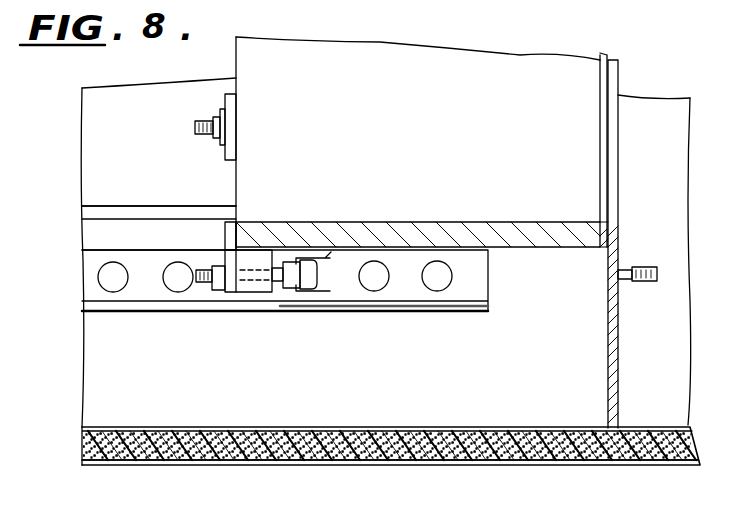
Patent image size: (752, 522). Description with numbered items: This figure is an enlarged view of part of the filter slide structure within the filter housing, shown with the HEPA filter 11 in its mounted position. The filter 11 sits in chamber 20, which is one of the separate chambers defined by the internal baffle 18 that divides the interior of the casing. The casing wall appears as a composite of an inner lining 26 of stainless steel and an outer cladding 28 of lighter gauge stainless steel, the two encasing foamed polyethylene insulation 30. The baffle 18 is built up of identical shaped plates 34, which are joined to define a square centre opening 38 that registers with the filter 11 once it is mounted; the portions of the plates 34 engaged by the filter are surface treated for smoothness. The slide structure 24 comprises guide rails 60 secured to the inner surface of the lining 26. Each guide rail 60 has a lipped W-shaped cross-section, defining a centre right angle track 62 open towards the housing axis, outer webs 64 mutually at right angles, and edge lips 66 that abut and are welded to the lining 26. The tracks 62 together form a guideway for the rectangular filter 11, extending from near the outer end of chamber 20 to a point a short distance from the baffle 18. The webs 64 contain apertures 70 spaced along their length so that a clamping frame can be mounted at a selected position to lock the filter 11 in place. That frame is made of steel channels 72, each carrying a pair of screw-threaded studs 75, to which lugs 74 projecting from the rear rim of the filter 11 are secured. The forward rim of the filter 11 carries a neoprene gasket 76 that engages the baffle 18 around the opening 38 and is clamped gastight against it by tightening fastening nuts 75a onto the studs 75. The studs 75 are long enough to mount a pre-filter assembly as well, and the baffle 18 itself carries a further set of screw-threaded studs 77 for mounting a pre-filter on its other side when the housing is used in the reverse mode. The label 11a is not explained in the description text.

The HEPA filter 11 is at (388, 89).
The base plate of body 11a is at (507, 232).
The internal baffle 18 is at (628, 203).
The chamber 20 is at (164, 391).
The slide structure 24 is at (204, 200).
The inner lining 26 is at (463, 428).
The outer cladding 28 is at (432, 468).
The foamed polyethylene insulation 30 is at (498, 436).
The shaped plate 34 is at (608, 358).
The square centre opening 38 is at (604, 182).
The guide rail 60 is at (120, 318).
The centre right angle track 62 is at (97, 236).
The outer web 64 is at (90, 262).
The edge lip 66 is at (107, 213).
The aperture 70 is at (104, 279).
The steel channel 72 is at (318, 291).
The lug 74 is at (230, 106).
The screw-threaded stud 75 is at (195, 128).
The fastening nut 75a is at (218, 139).
The neoprene gasket 76 is at (601, 237).
The screw-threaded stud 77 is at (648, 282).